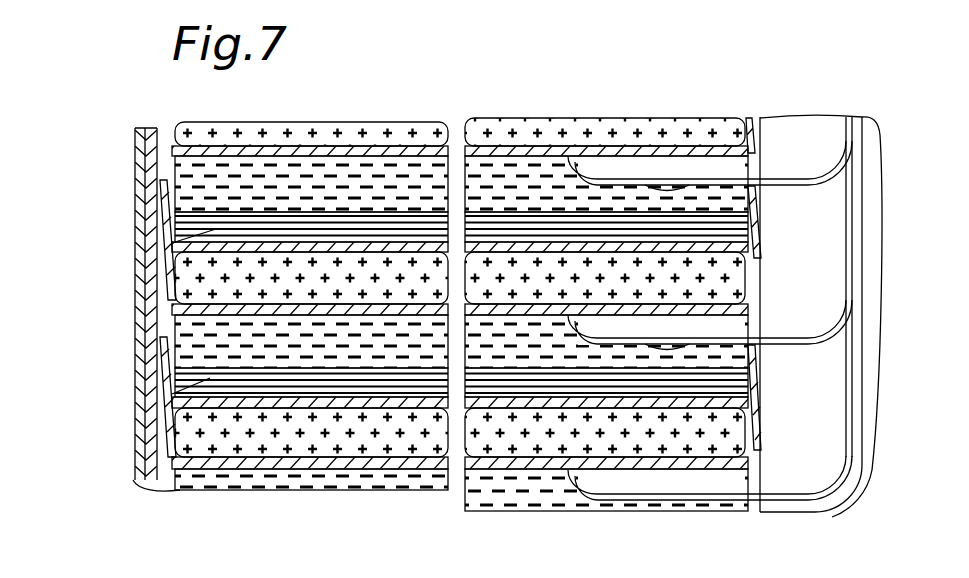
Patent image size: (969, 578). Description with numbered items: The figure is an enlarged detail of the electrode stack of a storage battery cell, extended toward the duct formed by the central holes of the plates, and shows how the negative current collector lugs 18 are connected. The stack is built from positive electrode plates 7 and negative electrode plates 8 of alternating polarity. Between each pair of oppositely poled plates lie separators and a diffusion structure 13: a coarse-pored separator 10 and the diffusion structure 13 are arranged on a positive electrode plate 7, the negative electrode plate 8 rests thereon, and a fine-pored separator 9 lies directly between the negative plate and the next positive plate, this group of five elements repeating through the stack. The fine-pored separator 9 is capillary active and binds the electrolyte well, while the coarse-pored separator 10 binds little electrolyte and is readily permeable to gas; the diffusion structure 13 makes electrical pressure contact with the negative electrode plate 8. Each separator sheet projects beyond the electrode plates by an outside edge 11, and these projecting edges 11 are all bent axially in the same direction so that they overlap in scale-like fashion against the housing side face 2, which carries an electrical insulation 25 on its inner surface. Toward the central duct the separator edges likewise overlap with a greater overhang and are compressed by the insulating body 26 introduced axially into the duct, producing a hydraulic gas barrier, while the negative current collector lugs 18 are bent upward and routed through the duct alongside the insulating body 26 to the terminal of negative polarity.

The housing side face 2 is at (138, 430).
The positive electrode plate 7 is at (672, 126).
The negative electrode plate 8 is at (545, 172).
The fine-pored separator 9 is at (328, 303).
The coarse-pored separator 10 is at (513, 244).
The projecting outside edge 11 is at (170, 412).
The diffusion structure 13 is at (210, 382).
The negative current collector lug 18 is at (860, 372).
The electrical insulation 25 is at (135, 479).
The insulating body 26 is at (830, 503).